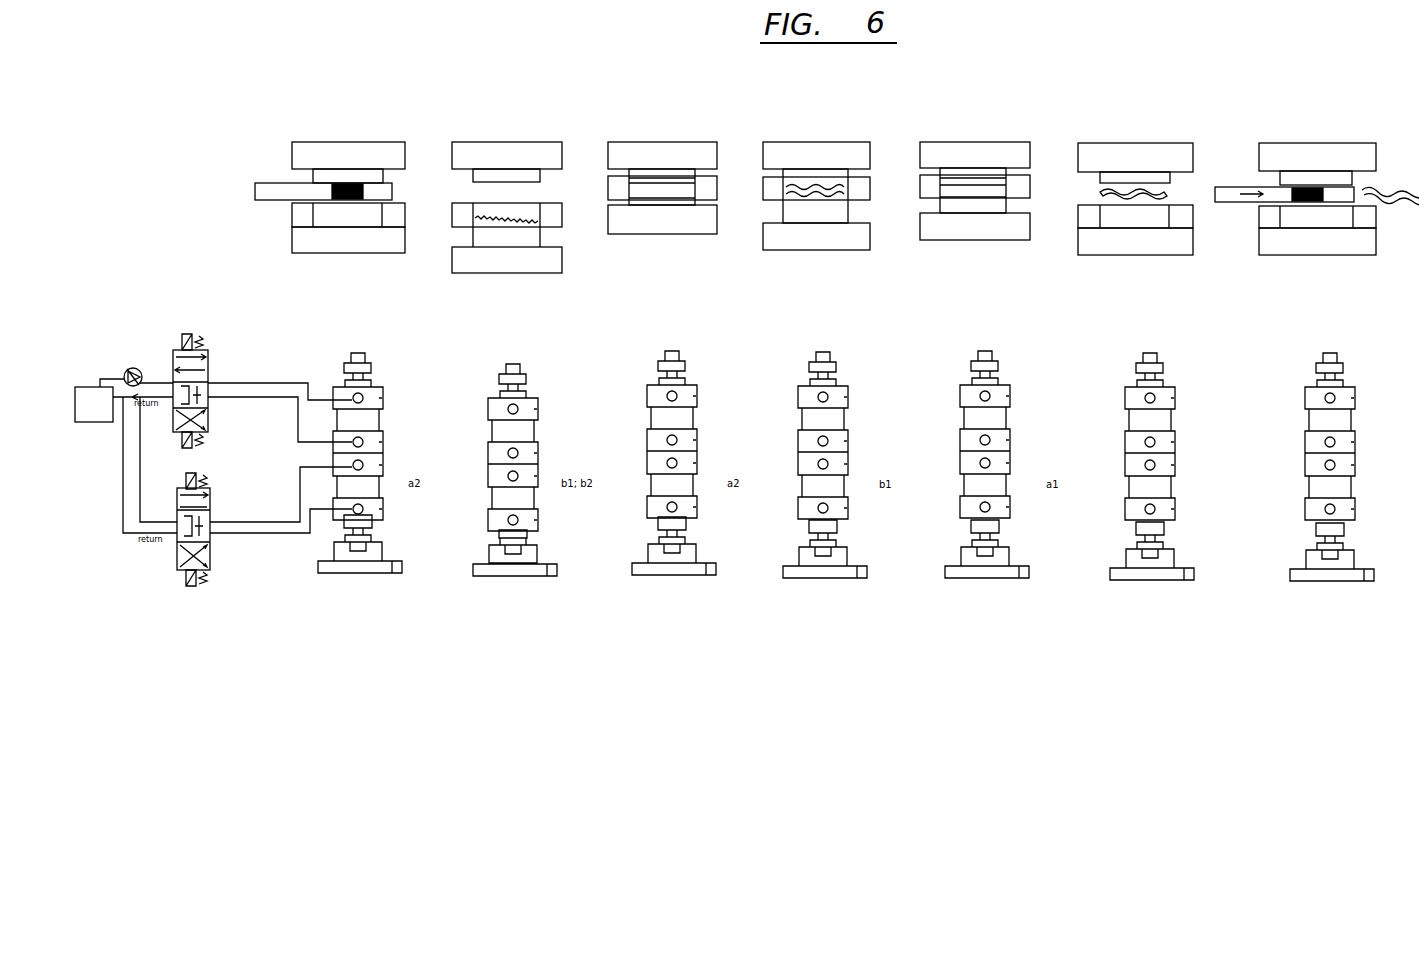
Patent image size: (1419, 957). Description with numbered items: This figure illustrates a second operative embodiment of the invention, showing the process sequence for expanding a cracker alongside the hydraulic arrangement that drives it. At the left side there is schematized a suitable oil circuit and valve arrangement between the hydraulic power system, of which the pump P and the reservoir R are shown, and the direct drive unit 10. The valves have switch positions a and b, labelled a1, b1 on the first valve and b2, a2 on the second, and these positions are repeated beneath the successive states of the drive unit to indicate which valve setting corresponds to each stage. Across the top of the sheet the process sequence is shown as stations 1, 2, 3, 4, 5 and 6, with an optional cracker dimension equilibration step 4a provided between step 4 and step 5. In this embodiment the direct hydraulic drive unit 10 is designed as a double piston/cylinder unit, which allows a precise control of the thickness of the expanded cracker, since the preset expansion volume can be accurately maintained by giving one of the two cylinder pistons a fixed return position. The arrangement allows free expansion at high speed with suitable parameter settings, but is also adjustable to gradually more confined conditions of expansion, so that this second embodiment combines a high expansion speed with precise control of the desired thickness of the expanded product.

The direct drive unit 10 is at (412, 425).
The station 1 (loading) 1 is at (330, 182).
The station 2 is at (507, 192).
The station 3 is at (662, 173).
The step 4 is at (816, 182).
The optional station 4a is at (976, 165).
The step 5 is at (1135, 186).
The station 6 (ejection) 6 is at (1317, 187).
The pump P is at (131, 365).
The reservoir R is at (94, 416).
The switch position a a1 is at (183, 342).
The switch position b b1 is at (183, 443).
The switch position a a2 is at (185, 582).
The switch position b b2 is at (185, 481).